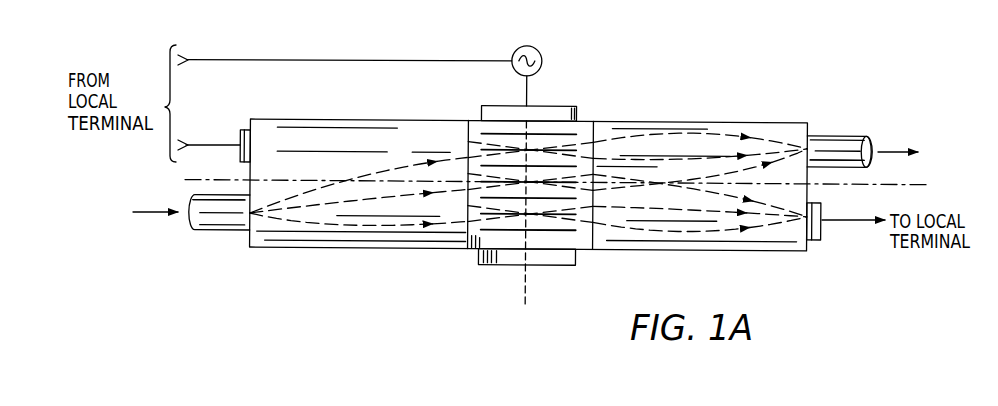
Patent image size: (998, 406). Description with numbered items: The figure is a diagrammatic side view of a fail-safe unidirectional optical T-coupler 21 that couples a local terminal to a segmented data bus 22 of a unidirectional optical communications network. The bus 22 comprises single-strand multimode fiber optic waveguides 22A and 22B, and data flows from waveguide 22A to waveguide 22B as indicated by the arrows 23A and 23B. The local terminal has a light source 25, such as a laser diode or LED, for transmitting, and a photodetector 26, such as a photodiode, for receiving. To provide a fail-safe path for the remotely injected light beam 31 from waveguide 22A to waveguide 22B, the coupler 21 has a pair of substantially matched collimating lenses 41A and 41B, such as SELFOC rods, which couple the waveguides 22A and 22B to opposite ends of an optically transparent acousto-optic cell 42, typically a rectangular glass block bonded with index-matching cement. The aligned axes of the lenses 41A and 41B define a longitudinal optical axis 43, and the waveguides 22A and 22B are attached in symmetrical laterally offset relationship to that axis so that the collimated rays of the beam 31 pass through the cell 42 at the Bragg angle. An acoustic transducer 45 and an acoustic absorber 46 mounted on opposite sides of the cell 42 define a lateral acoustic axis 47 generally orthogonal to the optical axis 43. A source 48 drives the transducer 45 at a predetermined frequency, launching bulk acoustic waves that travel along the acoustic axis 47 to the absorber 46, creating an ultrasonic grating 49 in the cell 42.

The unidirectional optical T-coupler 21 is at (678, 113).
The segmented data bus 22 is at (208, 234).
The fiber optic waveguide 22A is at (233, 228).
The fiber optic waveguide 22B is at (872, 140).
The arrow 23A is at (148, 213).
The arrow 23B is at (897, 155).
The light source 25 is at (240, 131).
The photodetector 26 is at (822, 238).
The remotely injected light beam 31 is at (368, 233).
The collimating lens 41A is at (308, 118).
The collimating lens 41B is at (665, 248).
The acousto-optic cell 42 is at (589, 120).
The optical axis 43 is at (193, 180).
The acoustic transducer 45 is at (563, 106).
The acoustic absorber 46 is at (493, 266).
The acoustic axis 47 is at (527, 278).
The source 48 is at (538, 50).
The ultrasonic grating 49 is at (483, 128).